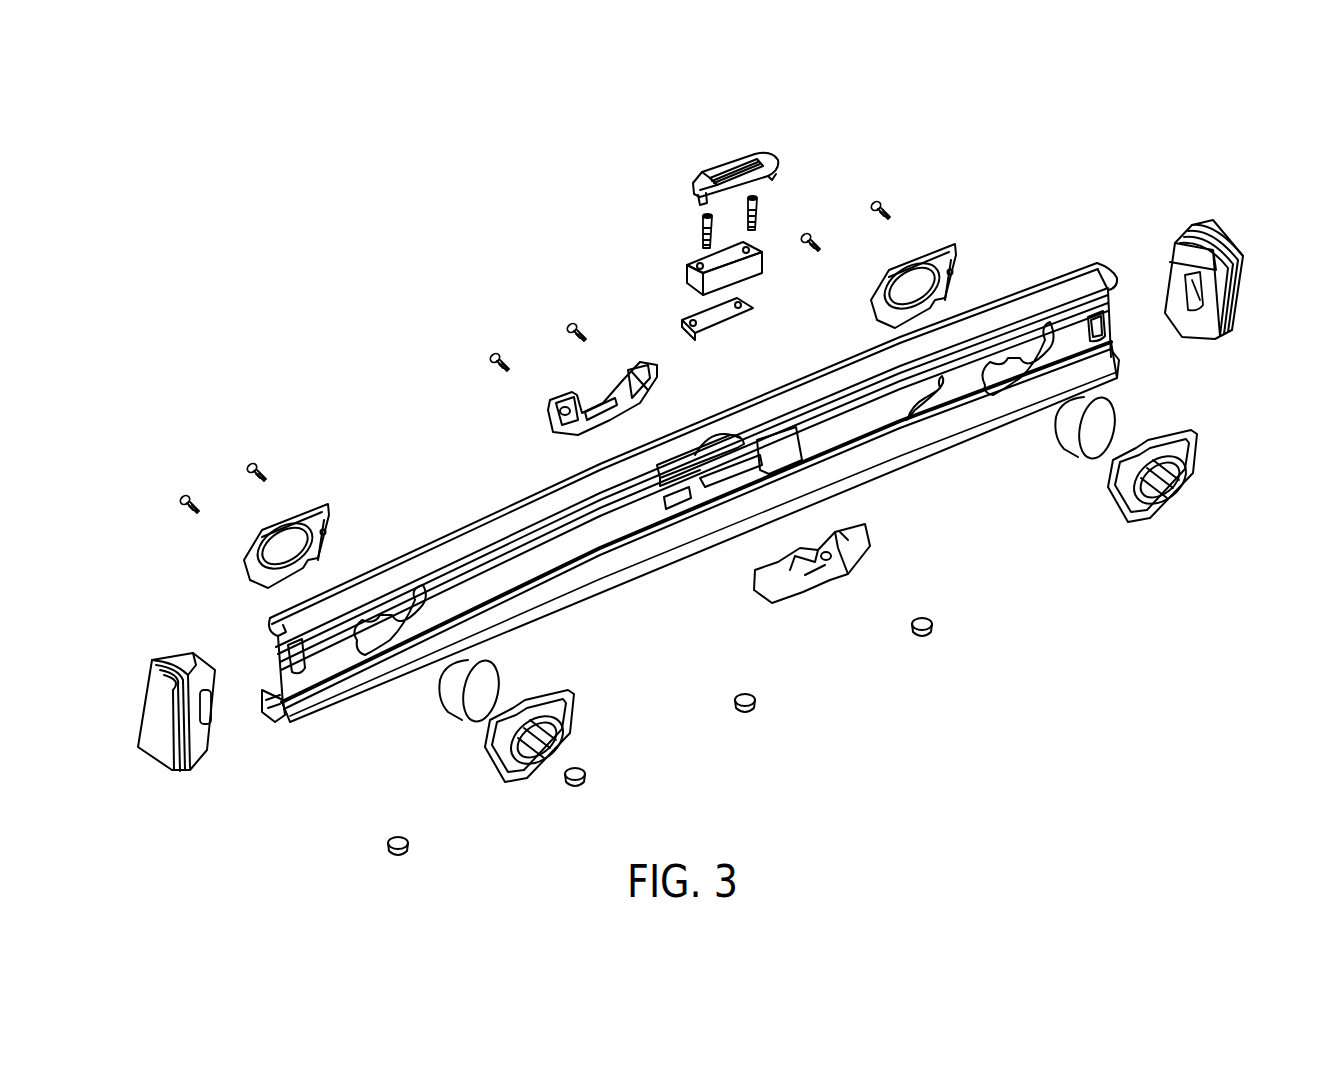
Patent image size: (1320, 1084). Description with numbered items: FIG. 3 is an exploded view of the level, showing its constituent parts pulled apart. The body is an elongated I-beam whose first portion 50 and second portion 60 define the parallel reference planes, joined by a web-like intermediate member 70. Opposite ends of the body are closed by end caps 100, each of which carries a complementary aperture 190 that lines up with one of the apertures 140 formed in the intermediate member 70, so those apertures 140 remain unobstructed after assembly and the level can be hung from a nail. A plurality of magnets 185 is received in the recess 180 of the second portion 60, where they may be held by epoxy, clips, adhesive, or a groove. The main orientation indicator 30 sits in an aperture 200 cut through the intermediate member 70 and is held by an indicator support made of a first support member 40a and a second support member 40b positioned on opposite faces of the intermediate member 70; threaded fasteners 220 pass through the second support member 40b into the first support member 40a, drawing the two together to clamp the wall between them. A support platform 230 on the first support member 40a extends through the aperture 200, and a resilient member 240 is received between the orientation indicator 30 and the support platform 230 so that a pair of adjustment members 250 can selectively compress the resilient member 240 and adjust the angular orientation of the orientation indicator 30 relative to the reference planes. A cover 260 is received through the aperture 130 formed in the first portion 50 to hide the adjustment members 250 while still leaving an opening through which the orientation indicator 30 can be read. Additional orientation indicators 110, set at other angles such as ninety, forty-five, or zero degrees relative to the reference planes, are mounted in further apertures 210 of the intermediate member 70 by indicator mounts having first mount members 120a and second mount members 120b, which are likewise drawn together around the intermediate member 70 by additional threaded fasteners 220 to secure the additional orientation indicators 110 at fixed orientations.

The orientation indicator 30 is at (689, 266).
The first support member 40a is at (815, 595).
The second support member 40b is at (554, 400).
The first portion 50 is at (512, 510).
The second portion 60 is at (628, 590).
The intermediate member 70 is at (528, 570).
The end caps 100 is at (148, 656).
The additional orientation indicators 110 is at (470, 703).
The first mount member 120a is at (510, 770).
The second mount member 120b is at (300, 500).
The aperture 130 is at (700, 450).
The apertures 140 is at (292, 655).
The recess 180 is at (272, 722).
The magnets 185 is at (930, 632).
The complementary apertures 190 is at (206, 708).
The aperture 200 is at (672, 512).
The apertures 210 is at (385, 622).
The threaded fasteners 220 is at (187, 500).
The support platform 230 is at (862, 530).
The resilient member 240 is at (690, 313).
The adjustment members 250 is at (700, 222).
The cover 260 is at (717, 162).